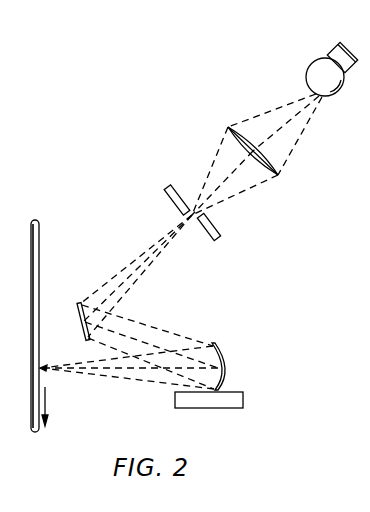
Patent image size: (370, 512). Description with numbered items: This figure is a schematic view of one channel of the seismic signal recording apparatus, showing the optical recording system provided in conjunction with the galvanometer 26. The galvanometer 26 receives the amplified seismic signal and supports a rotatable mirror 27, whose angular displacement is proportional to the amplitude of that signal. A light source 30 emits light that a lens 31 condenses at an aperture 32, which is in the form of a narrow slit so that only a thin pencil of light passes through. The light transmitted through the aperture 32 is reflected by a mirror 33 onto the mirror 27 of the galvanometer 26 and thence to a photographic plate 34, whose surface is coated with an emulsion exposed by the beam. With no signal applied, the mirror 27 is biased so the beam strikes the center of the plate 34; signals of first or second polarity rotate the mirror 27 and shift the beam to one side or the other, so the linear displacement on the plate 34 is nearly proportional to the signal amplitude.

The light source 30 is at (306, 78).
The lens 31 is at (271, 163).
The aperture 32 is at (189, 218).
The mirror 33 is at (79, 301).
The photographic plate 34 is at (40, 236).
The rotatable mirror 27 is at (220, 360).
The galvanometer 26 is at (246, 403).